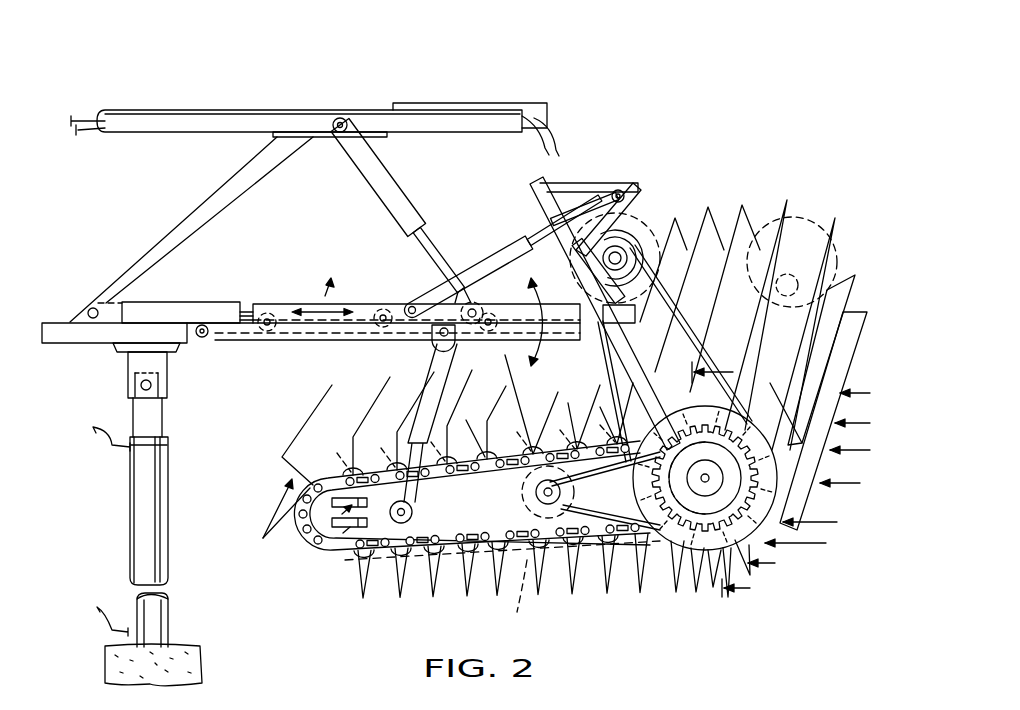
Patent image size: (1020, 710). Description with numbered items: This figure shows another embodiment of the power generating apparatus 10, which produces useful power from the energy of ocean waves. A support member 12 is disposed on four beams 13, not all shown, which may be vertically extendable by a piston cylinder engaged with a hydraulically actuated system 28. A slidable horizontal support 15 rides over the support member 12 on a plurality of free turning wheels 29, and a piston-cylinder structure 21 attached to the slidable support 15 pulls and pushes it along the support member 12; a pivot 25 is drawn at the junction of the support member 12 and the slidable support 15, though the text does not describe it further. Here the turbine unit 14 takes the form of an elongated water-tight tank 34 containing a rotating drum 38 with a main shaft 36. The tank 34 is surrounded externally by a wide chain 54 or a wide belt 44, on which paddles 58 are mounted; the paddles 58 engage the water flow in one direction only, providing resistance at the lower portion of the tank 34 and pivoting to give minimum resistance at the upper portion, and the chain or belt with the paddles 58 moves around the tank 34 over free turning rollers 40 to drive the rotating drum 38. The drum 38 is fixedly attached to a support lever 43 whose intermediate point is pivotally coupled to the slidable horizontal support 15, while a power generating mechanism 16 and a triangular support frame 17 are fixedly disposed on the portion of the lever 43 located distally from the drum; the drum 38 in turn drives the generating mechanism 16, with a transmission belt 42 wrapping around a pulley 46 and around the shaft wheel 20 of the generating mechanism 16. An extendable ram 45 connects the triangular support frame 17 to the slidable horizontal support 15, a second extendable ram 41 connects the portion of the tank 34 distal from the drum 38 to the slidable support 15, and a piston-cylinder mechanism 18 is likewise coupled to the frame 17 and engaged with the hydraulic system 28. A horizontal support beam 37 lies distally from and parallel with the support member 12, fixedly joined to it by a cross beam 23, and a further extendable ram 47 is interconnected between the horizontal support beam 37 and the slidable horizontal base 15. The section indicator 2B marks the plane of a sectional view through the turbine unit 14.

The power generating apparatus 10 is at (456, 380).
The support member 12 is at (88, 346).
The beams 13 is at (170, 450).
The turbine unit 14 is at (771, 430).
The slidable horizontal support 15 is at (272, 304).
The power generating mechanism 16 is at (646, 276).
The triangular support frame 17 is at (576, 188).
The piston-cylinder mechanism 18 is at (350, 552).
The shaft wheel 20 is at (648, 259).
The piston-cylinder structure 21 is at (173, 300).
The cross beam 23 is at (241, 196).
The pivot pin 25 is at (203, 340).
The hydraulically actuated system 28 is at (440, 304).
The free turning wheels 29 is at (268, 333).
The water-tight tank 34 is at (476, 575).
The main shaft 36 is at (745, 485).
The horizontal support beam 37 is at (430, 104).
The rotating drum 38 is at (798, 240).
The roller 40 is at (320, 478).
The second extendable ram 41 is at (430, 356).
The transmission belt 42 is at (703, 331).
The support lever 43 is at (610, 385).
The wide belt 44 is at (472, 495).
The extendable ram 45 is at (509, 250).
The pulley 46 is at (688, 576).
The further extendable ram 47 is at (399, 185).
The wide chain 54 is at (303, 552).
The paddles 58 is at (466, 428).
The section line 2B is at (742, 480).